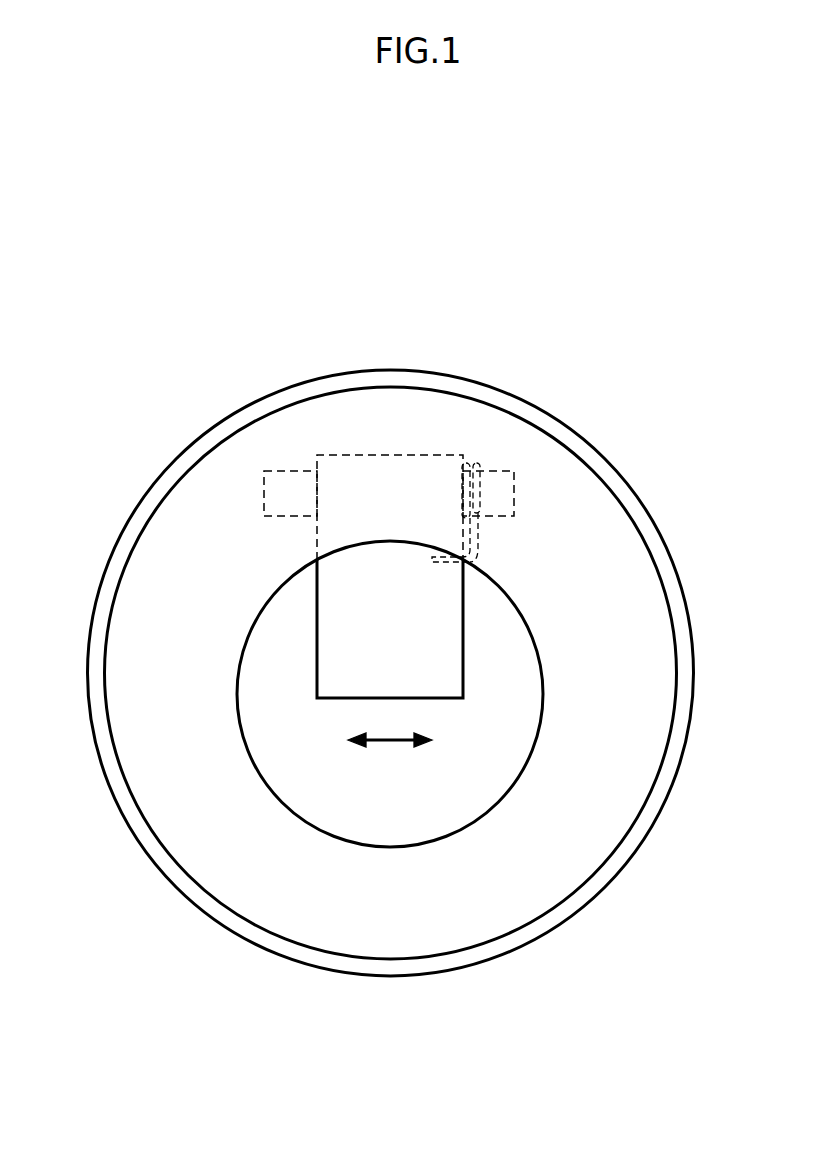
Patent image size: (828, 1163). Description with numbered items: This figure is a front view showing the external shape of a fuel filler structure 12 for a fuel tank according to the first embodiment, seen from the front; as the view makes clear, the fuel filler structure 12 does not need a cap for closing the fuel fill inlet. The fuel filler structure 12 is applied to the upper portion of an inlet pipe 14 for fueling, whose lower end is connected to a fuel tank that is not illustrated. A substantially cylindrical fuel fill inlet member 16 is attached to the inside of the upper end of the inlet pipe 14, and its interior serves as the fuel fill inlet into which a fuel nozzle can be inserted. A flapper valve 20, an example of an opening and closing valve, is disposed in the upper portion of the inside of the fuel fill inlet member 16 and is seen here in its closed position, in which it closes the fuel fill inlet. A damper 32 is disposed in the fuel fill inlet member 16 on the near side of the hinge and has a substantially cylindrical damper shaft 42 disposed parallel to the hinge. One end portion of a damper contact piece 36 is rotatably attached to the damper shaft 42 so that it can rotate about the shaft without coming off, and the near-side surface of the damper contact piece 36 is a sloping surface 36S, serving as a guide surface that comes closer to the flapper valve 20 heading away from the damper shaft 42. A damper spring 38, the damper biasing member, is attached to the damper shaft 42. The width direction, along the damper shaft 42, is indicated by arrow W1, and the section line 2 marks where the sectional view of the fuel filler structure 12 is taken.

The fuel filler structure 12 is at (561, 308).
The inlet pipe 14 is at (273, 942).
The fuel fill inlet member 16 is at (123, 572).
The line 2- 2 is at (390, 347).
The flapper valve 20 is at (497, 805).
The damper 32 is at (308, 655).
The damper contact piece 36 is at (464, 636).
The sloping surface 36S is at (330, 613).
The damper spring 38 is at (477, 463).
The damper shaft 42 is at (287, 470).
The width direction arrow W1 is at (390, 745).